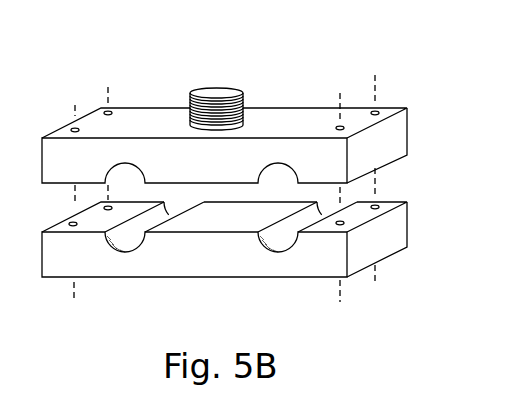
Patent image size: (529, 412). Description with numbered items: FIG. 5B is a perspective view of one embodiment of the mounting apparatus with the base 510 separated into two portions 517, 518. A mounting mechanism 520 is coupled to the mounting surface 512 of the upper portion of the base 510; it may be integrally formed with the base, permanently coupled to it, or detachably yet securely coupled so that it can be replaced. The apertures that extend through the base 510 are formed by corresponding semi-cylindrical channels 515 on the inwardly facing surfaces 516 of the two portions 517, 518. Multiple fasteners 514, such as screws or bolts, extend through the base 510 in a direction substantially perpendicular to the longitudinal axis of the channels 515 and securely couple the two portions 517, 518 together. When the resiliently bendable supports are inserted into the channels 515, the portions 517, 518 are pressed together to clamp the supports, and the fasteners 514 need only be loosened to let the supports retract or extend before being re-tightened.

The base 510 is at (64, 90).
The mounting surface 512 is at (142, 118).
The fasteners 514 is at (76, 128).
The semi-cylindrical channels 515 is at (275, 172).
The inwardly facing surfaces 516 is at (53, 199).
The first portion of the base 517 is at (392, 132).
The second portion of the base 518 is at (377, 238).
The mounting mechanism 520 is at (218, 92).